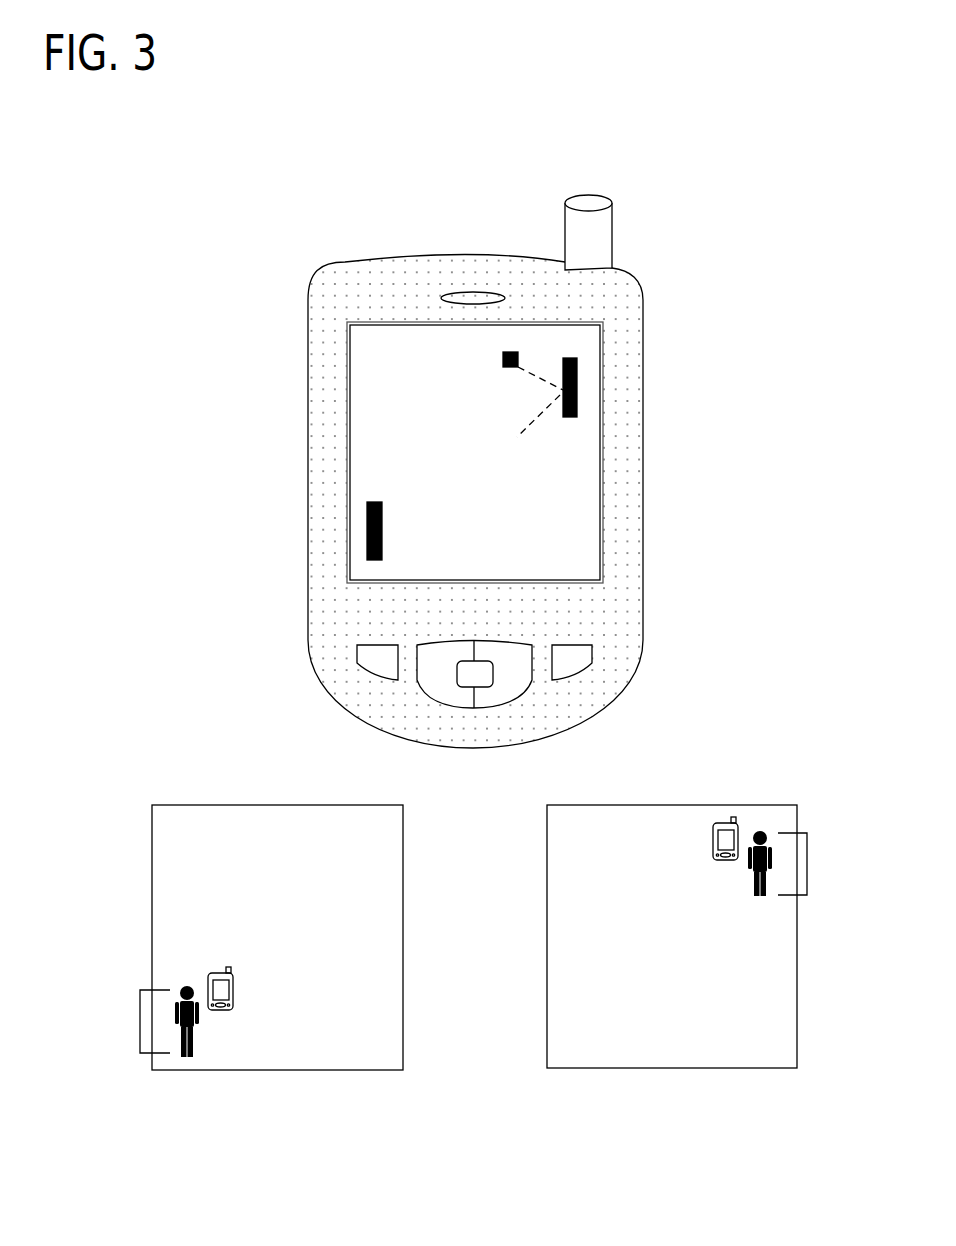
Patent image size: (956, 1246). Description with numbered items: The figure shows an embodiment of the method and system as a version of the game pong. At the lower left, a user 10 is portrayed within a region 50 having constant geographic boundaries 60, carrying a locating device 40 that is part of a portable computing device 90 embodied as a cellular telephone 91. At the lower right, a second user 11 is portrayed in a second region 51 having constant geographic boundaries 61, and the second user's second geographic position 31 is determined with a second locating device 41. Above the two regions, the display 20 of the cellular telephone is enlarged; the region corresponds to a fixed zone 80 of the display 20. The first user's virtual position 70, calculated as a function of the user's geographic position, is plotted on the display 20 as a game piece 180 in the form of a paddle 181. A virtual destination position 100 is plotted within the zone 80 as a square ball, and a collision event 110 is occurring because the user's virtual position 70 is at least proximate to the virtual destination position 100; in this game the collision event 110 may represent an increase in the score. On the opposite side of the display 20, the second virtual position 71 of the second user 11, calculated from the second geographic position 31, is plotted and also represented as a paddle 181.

The locating device 40 is at (475, 602).
The portable computing device 90 is at (475, 602).
The cellular telephone 91 is at (475, 602).
The display 20 is at (562, 452).
The fixed zone 80 is at (556, 547).
The game piece 180 is at (468, 463).
The paddle 181 is at (468, 463).
The virtual position 70 is at (367, 557).
The second virtual position 71 is at (577, 407).
The virtual destination position 100 is at (503, 358).
The collision event 110 is at (561, 390).
The user 10 is at (140, 1022).
The region 50 is at (310, 937).
The constant geographic boundaries 60 is at (371, 946).
The second user 11 is at (777, 865).
The second locating device 41 is at (713, 840).
The second geographic position 31 is at (757, 895).
The second region 51 is at (705, 936).
The constant geographic boundaries 61 is at (762, 946).